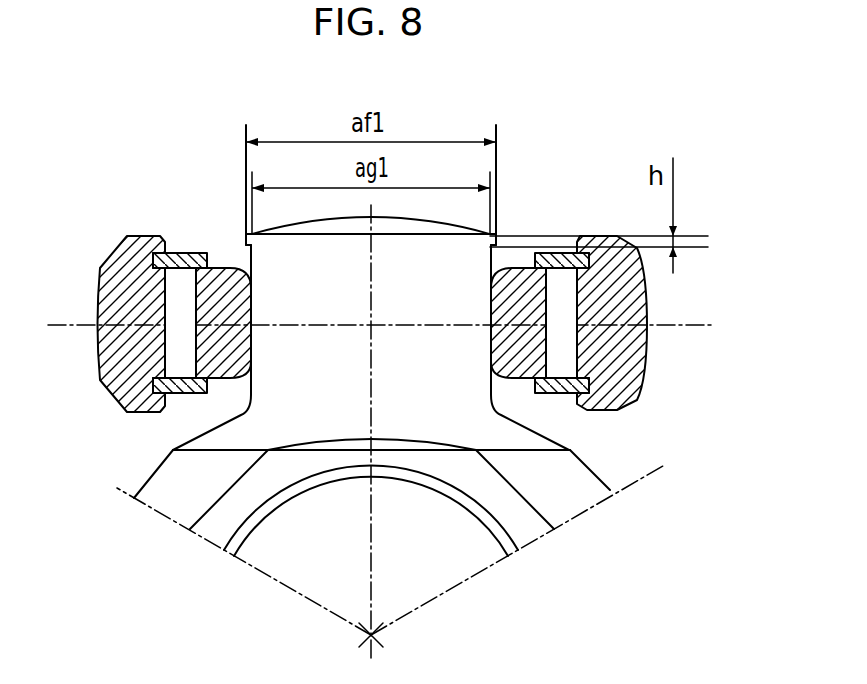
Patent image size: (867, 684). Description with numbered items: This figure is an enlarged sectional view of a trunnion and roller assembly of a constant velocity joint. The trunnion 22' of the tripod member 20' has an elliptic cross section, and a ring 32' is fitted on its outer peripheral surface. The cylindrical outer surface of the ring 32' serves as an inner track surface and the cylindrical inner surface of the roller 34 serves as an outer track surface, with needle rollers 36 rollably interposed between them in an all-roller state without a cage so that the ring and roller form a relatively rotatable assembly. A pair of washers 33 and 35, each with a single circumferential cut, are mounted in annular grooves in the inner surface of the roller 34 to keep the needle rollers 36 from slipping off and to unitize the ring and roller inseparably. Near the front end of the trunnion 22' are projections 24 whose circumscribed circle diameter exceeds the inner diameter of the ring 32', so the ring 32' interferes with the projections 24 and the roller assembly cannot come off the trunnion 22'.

The tripod member 20' is at (334, 493).
The trunnion 22' is at (371, 287).
The projections 24 is at (237, 220).
The ring 32' is at (175, 286).
The washer 33 is at (625, 283).
The roller 34 is at (123, 282).
The washer 35 is at (563, 384).
The needle rollers 36 is at (180, 305).